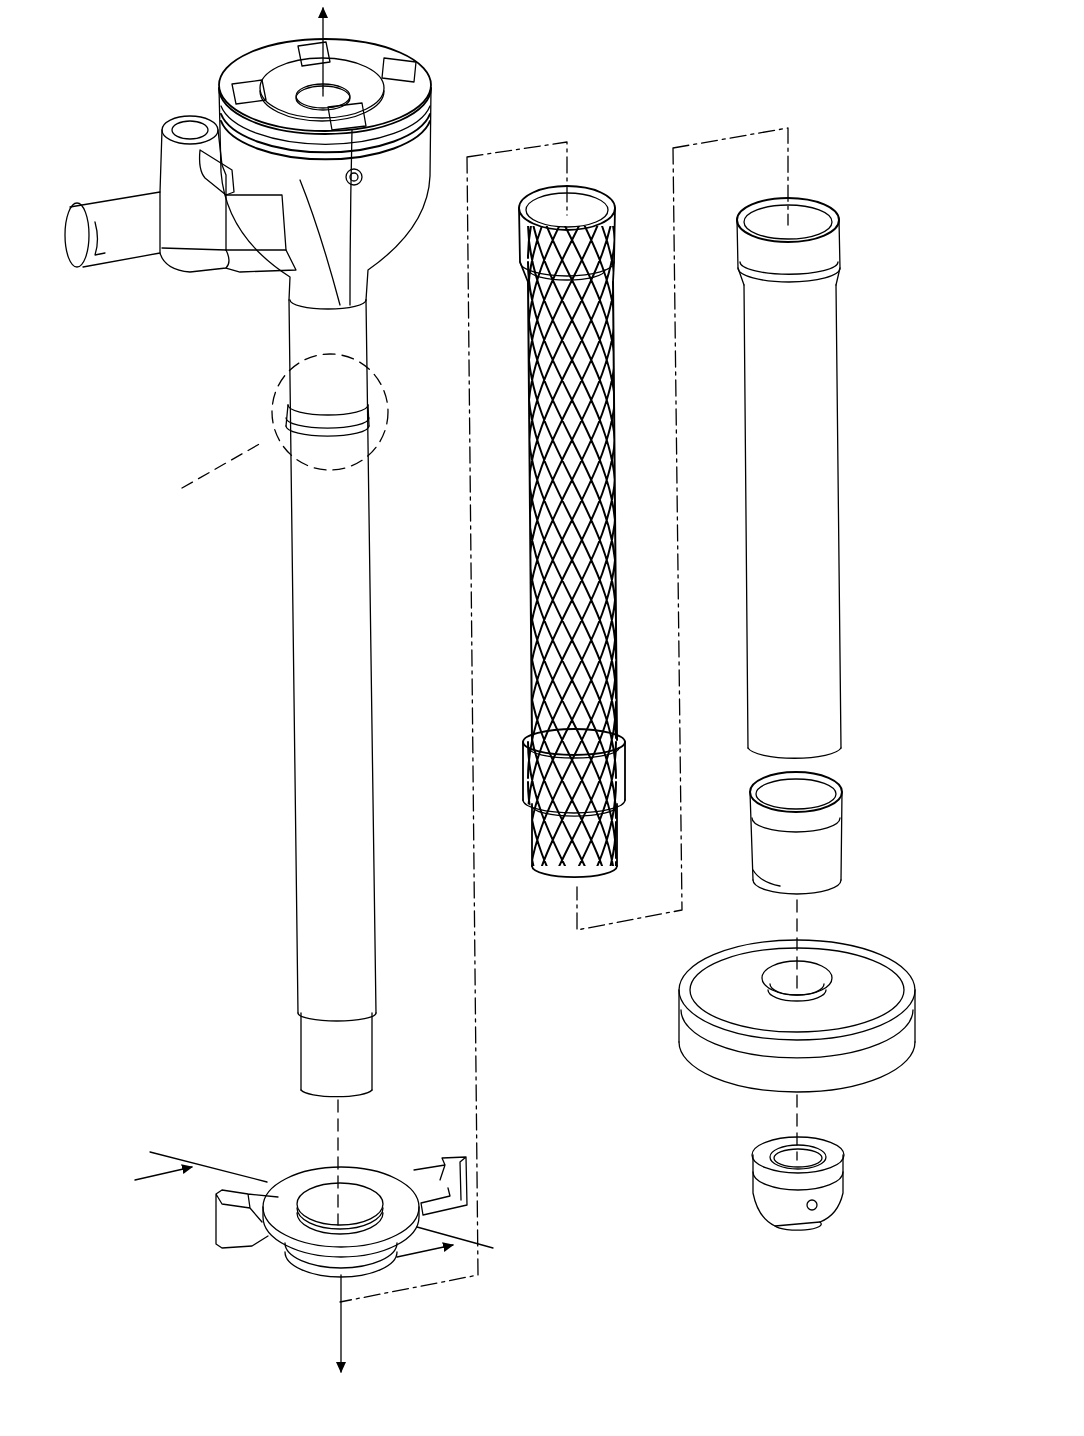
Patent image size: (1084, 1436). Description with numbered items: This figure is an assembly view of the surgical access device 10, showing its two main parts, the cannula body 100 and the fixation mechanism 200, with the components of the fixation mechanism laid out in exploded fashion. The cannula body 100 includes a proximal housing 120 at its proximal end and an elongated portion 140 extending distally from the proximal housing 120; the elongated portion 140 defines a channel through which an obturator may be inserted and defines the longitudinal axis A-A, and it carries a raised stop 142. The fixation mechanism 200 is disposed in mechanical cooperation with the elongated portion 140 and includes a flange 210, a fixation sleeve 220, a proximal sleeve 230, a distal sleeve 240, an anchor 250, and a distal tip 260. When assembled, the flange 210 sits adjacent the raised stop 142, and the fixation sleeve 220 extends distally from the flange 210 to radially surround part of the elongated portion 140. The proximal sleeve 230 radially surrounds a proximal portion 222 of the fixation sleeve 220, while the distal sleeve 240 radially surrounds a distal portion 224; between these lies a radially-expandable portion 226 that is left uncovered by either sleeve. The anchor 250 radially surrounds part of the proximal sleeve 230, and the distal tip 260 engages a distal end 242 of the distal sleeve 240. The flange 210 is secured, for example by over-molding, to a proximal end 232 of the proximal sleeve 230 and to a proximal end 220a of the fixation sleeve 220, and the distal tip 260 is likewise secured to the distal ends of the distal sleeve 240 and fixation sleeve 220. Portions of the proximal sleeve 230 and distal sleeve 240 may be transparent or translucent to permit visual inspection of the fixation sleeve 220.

The surgical access device 10 is at (186, 73).
The cannula body 100 is at (157, 328).
The proximal housing 120 is at (440, 109).
The elongated portion 140 is at (300, 555).
The raised stop 142 is at (350, 417).
The fixation mechanism 200 is at (850, 448).
The flange 210 is at (287, 1217).
The fixation sleeve 220 is at (622, 258).
The proximal end of the fixation sleeve 220a is at (614, 318).
The proximal portion of the fixation sleeve 222 is at (600, 383).
The distal portion of the fixation sleeve 224 is at (604, 852).
The radially-expandable portion 226 is at (614, 772).
The proximal sleeve 230 is at (816, 208).
The proximal end of the proximal sleeve 232 is at (832, 244).
The distal sleeve 240 is at (828, 839).
The distal end of the distal sleeve 242 is at (768, 880).
The anchor 250 is at (697, 1021).
The distal tip 260 is at (770, 1187).